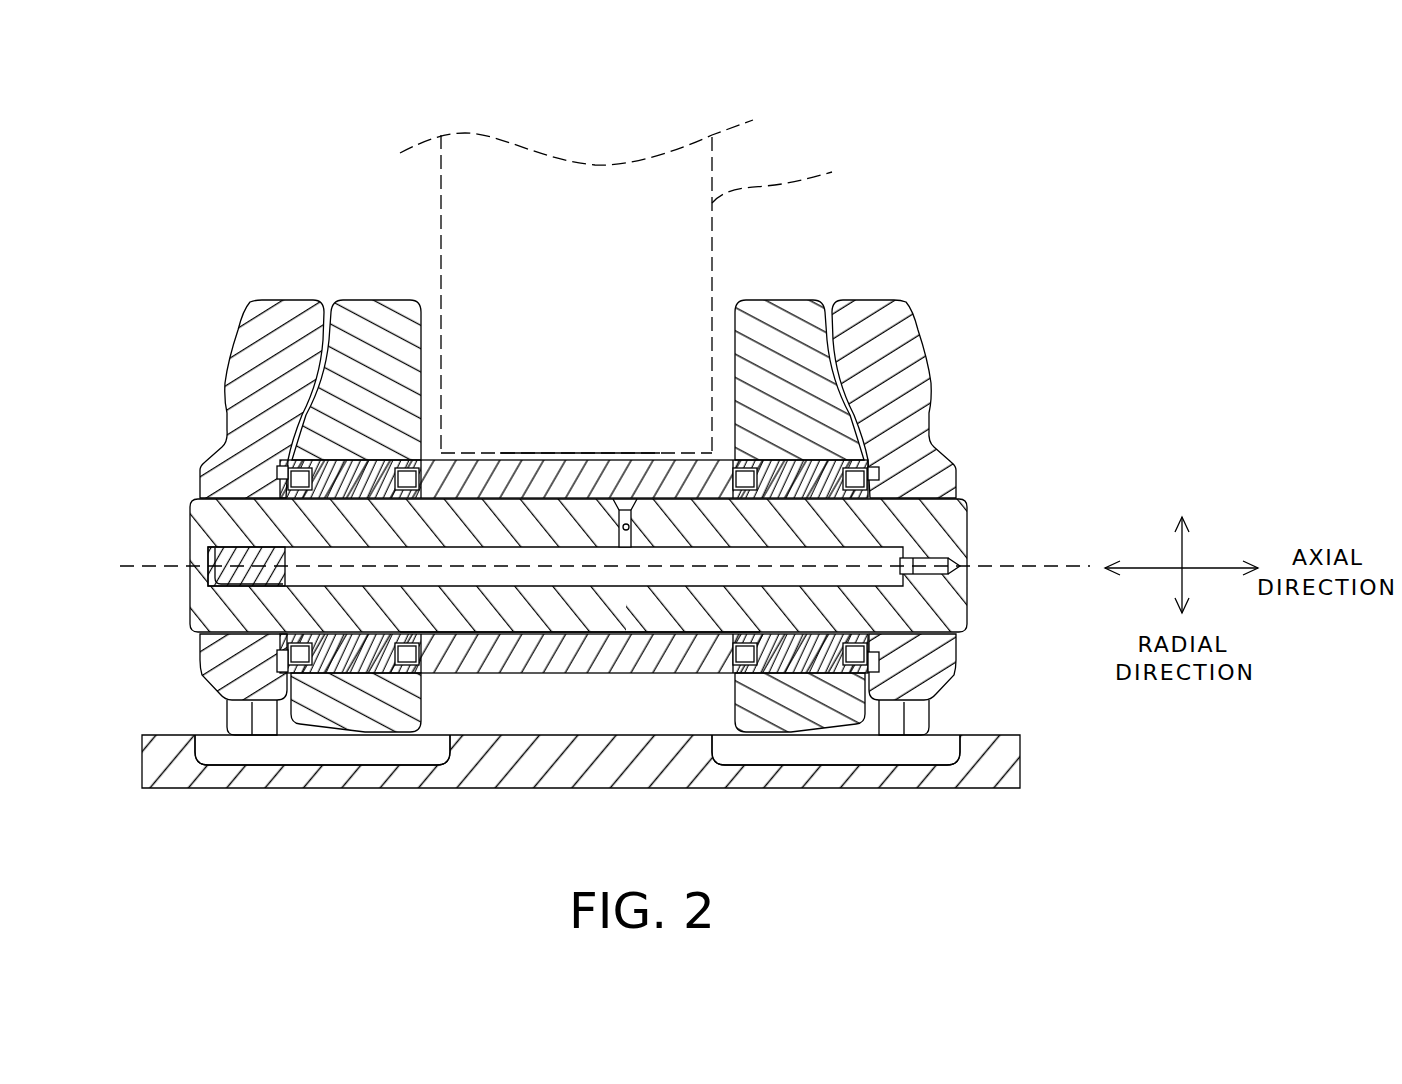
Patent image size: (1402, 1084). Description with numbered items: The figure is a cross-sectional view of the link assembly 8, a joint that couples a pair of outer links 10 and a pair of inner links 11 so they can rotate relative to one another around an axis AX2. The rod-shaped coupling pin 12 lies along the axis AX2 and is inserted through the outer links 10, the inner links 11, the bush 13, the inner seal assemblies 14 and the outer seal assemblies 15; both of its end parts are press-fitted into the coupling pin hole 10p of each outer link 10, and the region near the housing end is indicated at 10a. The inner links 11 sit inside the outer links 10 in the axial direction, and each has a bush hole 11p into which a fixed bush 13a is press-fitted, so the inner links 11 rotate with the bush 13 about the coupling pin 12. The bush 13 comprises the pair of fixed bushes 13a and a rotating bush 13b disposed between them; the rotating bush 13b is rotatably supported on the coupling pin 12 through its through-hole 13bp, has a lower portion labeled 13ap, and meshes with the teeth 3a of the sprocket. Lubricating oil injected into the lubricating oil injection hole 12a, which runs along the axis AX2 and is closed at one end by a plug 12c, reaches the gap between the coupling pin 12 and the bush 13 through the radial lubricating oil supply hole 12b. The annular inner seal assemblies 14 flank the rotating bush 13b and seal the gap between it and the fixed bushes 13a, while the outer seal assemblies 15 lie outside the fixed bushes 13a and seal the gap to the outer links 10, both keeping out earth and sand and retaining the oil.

The link assembly 8 is at (1066, 182).
The teeth 3a is at (790, 173).
The outer links 10 is at (270, 324).
The housing inner portion 10a is at (932, 522).
The coupling pin hole 10p is at (266, 662).
The inner links 11 is at (382, 318).
The bush hole 11p is at (358, 700).
The coupling pin 12 is at (240, 610).
The lubricating oil injection hole 12a is at (520, 640).
The lubricating oil supply hole 12b is at (628, 510).
The plug 12c is at (218, 562).
The bush 13 is at (675, 224).
The fixed bushes 13a is at (368, 468).
The rotating bush 13b is at (571, 462).
The lower coil end portion 13ap is at (283, 690).
The through-hole 13bp is at (600, 645).
The inner seal assemblies 14 is at (453, 462).
The outer seal assemblies 15 is at (290, 478).
The axis AX2 is at (1013, 568).